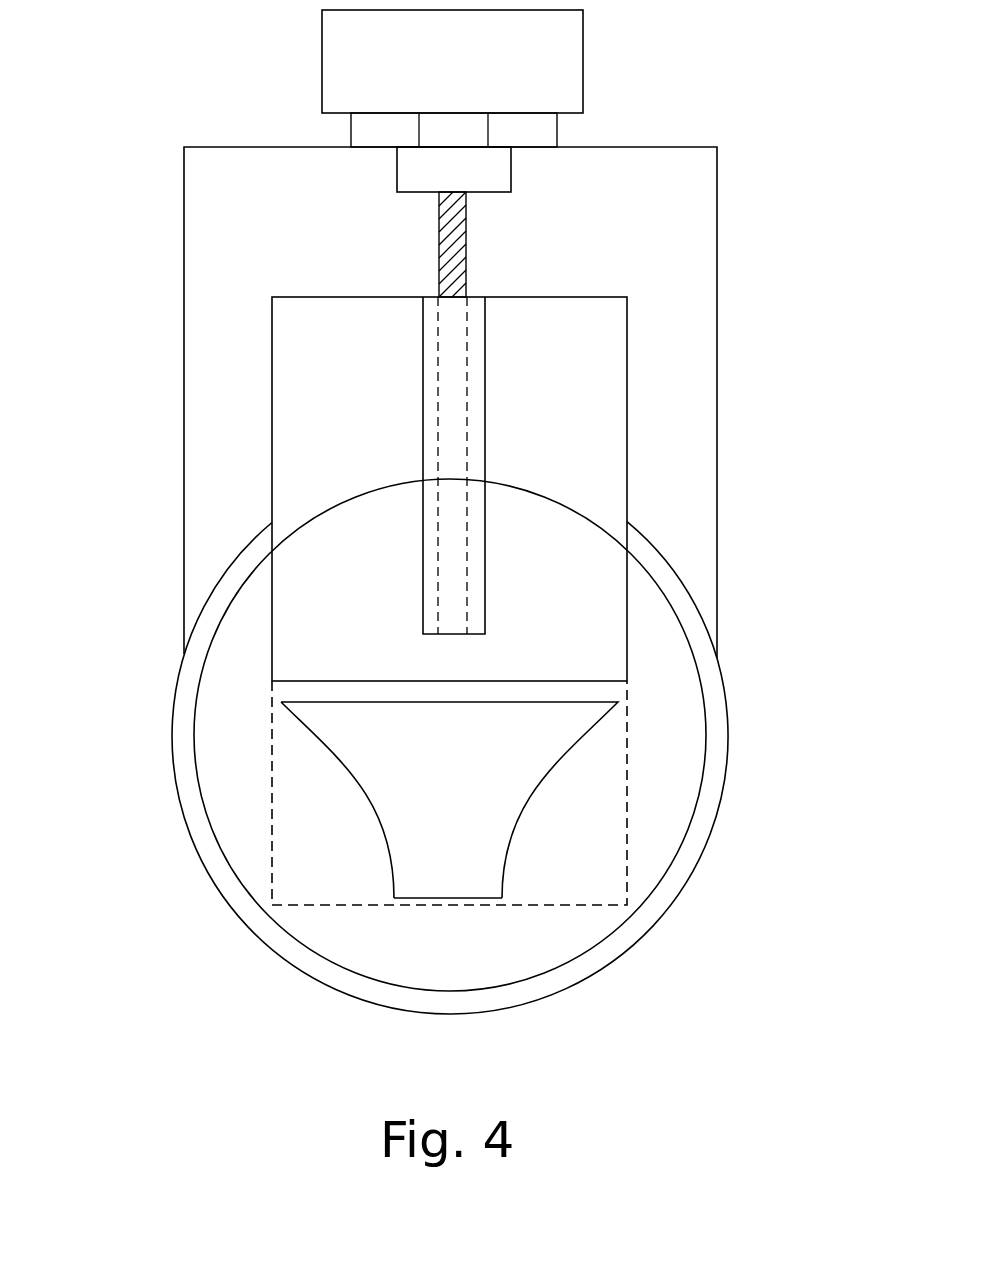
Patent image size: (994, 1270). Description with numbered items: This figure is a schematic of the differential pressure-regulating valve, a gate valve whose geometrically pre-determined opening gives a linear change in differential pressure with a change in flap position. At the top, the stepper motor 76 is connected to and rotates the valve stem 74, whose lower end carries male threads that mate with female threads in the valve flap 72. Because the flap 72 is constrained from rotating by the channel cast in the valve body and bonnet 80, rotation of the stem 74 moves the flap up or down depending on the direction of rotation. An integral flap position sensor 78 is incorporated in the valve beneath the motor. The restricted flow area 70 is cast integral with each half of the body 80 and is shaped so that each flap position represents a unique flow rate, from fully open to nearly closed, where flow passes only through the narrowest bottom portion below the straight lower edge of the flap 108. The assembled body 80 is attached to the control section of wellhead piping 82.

The differential pressure regulating valve flow area 70 is at (480, 870).
The differential pressure regulating valve flap 72 is at (607, 643).
The differential pressure adjustment valve stem 74 is at (467, 268).
The differential pressure regulating valve stepper motor 76 is at (548, 62).
The differential pressure regulating valve flap position sensor 78 is at (374, 131).
The differential pressure regulating valve body and bonnet 80 is at (192, 708).
The wellhead piping 82 is at (173, 757).
The straight lower edge of the flap 108 is at (452, 898).